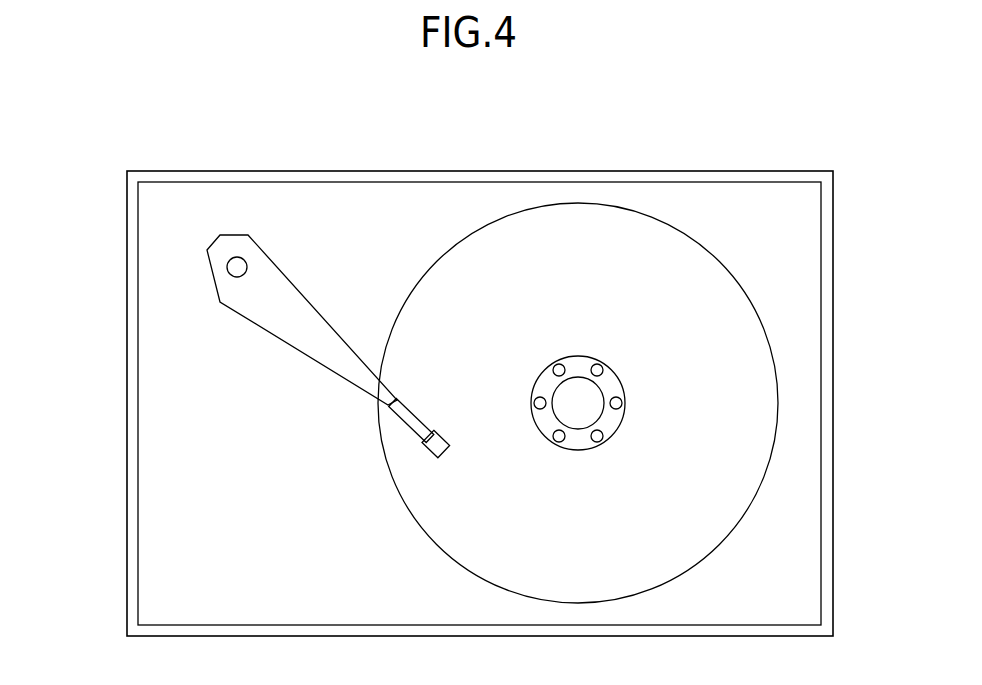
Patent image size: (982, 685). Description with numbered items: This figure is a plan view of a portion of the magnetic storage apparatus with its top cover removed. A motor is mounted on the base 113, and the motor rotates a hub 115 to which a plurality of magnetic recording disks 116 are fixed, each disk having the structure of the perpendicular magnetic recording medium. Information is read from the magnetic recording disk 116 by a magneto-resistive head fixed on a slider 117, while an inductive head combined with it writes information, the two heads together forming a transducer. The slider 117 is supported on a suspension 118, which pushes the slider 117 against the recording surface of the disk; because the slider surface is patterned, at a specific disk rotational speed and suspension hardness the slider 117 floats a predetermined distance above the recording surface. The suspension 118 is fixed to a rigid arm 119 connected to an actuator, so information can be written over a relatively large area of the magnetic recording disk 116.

The base 113 is at (832, 557).
The hub 115 is at (587, 403).
The magnetic recording disk 116 is at (688, 250).
The slider 117 is at (445, 438).
The suspension 118 is at (408, 417).
The rigid arm 119 is at (285, 320).